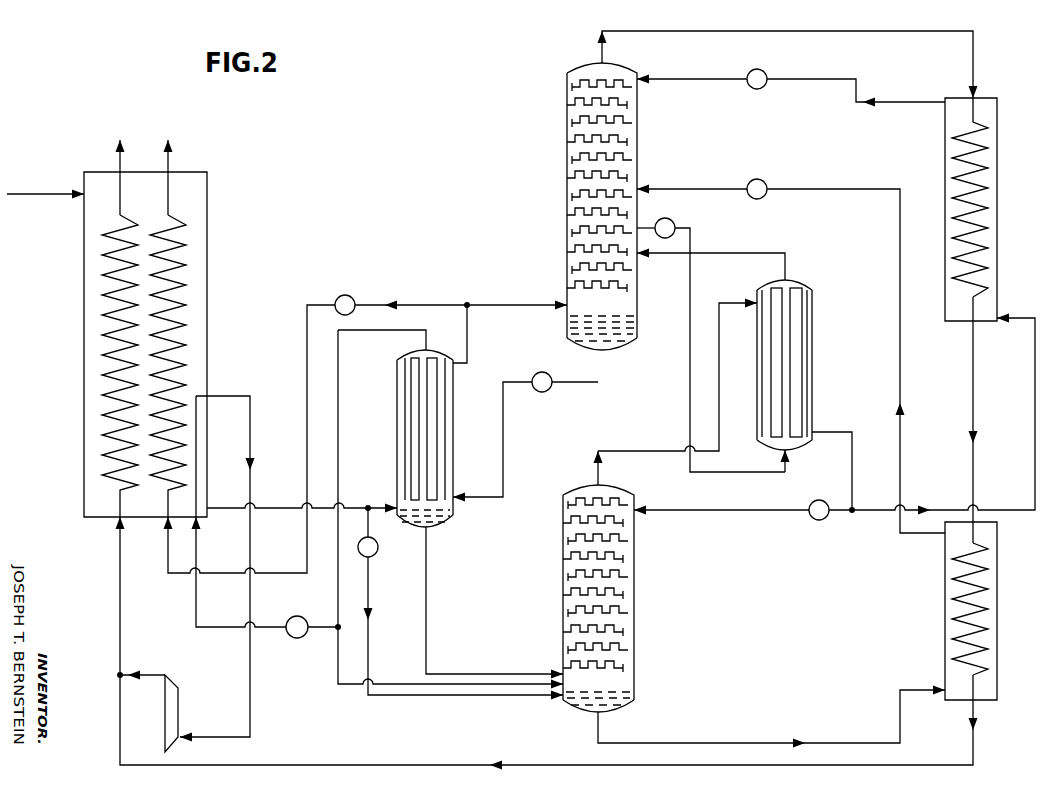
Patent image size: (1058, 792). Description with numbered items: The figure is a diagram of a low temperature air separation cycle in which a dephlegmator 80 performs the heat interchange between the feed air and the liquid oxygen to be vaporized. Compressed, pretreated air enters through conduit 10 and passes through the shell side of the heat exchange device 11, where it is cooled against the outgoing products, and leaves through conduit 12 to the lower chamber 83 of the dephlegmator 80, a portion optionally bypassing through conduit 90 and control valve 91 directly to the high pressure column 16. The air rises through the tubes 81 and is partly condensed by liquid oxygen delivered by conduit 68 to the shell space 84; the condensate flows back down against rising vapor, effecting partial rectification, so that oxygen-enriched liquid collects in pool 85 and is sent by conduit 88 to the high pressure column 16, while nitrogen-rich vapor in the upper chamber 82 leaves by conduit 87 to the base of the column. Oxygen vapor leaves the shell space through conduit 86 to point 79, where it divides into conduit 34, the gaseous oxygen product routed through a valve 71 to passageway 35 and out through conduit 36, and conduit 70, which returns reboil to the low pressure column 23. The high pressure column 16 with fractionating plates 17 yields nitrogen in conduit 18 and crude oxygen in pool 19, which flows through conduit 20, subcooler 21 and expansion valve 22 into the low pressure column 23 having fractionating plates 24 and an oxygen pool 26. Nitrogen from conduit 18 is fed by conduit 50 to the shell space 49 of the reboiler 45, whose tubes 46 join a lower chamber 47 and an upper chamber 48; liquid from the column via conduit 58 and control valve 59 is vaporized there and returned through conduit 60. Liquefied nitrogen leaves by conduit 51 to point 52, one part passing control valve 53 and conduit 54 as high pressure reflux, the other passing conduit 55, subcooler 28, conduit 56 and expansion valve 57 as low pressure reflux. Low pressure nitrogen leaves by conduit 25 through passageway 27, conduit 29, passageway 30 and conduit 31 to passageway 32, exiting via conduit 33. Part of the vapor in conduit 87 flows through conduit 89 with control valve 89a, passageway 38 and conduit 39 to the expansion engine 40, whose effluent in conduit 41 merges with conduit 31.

The conduit 10 is at (47, 190).
The heat exchange device 11 is at (82, 316).
The conduit 12 is at (292, 508).
The high pressure column 16 is at (634, 628).
The fractionating plates 17 is at (634, 575).
The conduit 18 is at (601, 466).
The pool 19 is at (618, 708).
The conduit 20 is at (880, 186).
The subcooler 21 is at (945, 588).
The expansion valve 22 is at (770, 183).
The low pressure column 23 is at (567, 147).
The fractionating plates 24 is at (567, 176).
The conduit 25 is at (708, 28).
The pool 26 is at (637, 338).
The passageway 27 is at (987, 207).
The subcooler 28 is at (998, 162).
The conduit 29 is at (971, 366).
The passageway 30 is at (988, 583).
The conduit 31 is at (117, 558).
The passageway 32 is at (104, 371).
The conduit 33 is at (118, 160).
The conduit 34 is at (170, 566).
The passageway 35 is at (182, 302).
The conduit 36 is at (169, 163).
The passageway 38 is at (196, 442).
The conduit 39 is at (243, 378).
The expansion engine 40 is at (172, 682).
The conduit 41 is at (156, 670).
The reboiler 45 is at (815, 361).
The tubes 46 is at (806, 336).
The lower chamber 47 is at (786, 444).
The upper chamber 48 is at (786, 282).
The shell space 49 is at (806, 386).
The conduit 50 is at (720, 373).
The conduit 51 is at (853, 488).
The point 52 is at (855, 512).
The control valve 53 is at (814, 503).
The conduit 54 is at (723, 508).
The conduit 55 is at (875, 510).
The conduit 56 is at (833, 78).
The expansion valve 57 is at (772, 71).
The conduit 58 is at (692, 298).
The control valve 59 is at (667, 216).
The conduit 60 is at (740, 253).
The conduit 68 is at (503, 437).
The conduit 70 is at (523, 298).
The valve 71 is at (357, 295).
The point 79 is at (475, 298).
The dephlegmator 80 is at (396, 440).
The tubes 81 is at (450, 425).
The upper chamber 82 is at (428, 355).
The lower chamber 83 is at (443, 506).
The shell space 84 is at (453, 388).
The pool 85 is at (438, 529).
The conduit 86 is at (469, 343).
The conduit 87 is at (377, 332).
The conduit 88 is at (429, 603).
The conduit 89 is at (234, 626).
The control valve 89a is at (310, 624).
The conduit 90 is at (372, 582).
The control valve 91 is at (379, 546).